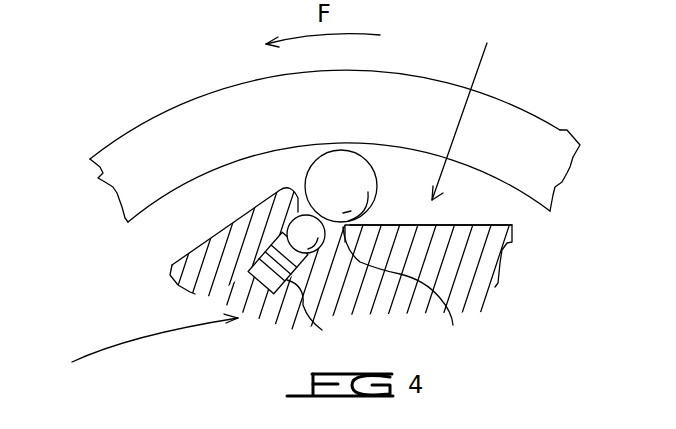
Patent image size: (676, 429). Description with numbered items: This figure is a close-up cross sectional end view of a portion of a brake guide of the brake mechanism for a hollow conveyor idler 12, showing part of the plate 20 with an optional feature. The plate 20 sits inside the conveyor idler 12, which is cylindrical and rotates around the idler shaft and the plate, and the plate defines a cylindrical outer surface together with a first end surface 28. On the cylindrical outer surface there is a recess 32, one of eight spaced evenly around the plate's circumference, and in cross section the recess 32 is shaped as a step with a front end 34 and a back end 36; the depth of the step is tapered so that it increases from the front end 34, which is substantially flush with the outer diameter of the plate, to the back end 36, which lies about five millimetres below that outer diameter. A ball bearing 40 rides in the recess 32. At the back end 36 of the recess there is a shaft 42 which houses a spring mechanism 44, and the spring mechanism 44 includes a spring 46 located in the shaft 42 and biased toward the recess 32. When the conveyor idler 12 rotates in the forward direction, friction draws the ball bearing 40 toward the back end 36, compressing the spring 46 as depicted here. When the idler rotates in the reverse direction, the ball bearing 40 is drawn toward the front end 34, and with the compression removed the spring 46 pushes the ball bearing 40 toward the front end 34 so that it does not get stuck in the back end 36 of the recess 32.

The hollow conveyor idler 12 is at (555, 132).
The plate 20 is at (131, 351).
The first end surface 28 is at (480, 280).
The recess 32 is at (476, 107).
The front end 34 is at (478, 224).
The back end 36 is at (417, 290).
The ball bearing 40 is at (305, 182).
The shaft 42 is at (268, 240).
The spring mechanism 44 is at (250, 276).
The spring 46 is at (334, 317).